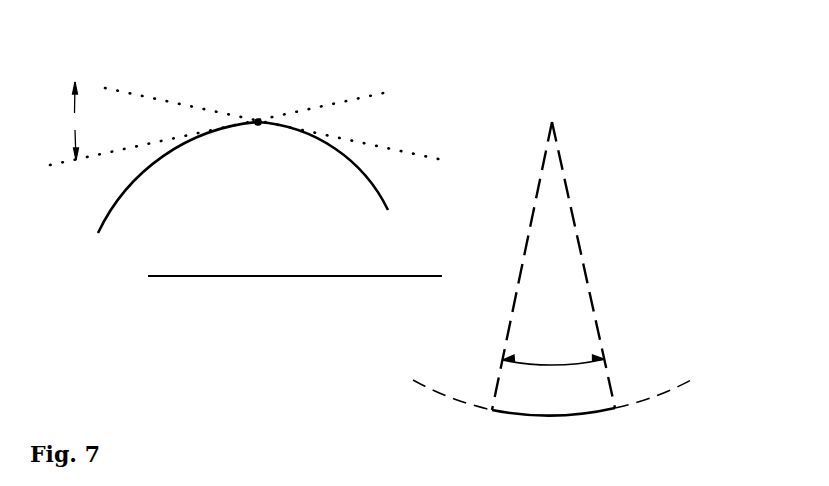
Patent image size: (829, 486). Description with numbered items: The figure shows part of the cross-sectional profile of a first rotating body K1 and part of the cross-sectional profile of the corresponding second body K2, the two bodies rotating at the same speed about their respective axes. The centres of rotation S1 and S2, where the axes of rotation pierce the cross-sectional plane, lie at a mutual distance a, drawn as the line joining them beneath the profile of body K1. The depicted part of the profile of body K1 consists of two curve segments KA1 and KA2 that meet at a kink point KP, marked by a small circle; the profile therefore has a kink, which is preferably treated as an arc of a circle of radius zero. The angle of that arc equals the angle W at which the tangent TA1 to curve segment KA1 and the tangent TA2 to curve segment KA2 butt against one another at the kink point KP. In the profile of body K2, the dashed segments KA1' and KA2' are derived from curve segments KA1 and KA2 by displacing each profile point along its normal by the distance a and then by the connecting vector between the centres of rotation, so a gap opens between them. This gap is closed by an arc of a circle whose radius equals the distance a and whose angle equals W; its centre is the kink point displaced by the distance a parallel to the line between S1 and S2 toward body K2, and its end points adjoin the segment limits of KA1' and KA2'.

The body K1 is at (265, 41).
The body K2 is at (587, 81).
The curve segment KA1 is at (159, 196).
The curve segment KA2 is at (331, 182).
The curve segment KA1' is at (667, 405).
The curve segment KA2' is at (500, 405).
The kink point KP is at (261, 104).
The tangent TA1 is at (250, 122).
The tangent TA2 is at (274, 111).
The angle W is at (316, 223).
The centre of rotation S1 is at (287, 298).
The centre of rotation S2 is at (446, 307).
The distance a is at (293, 306).